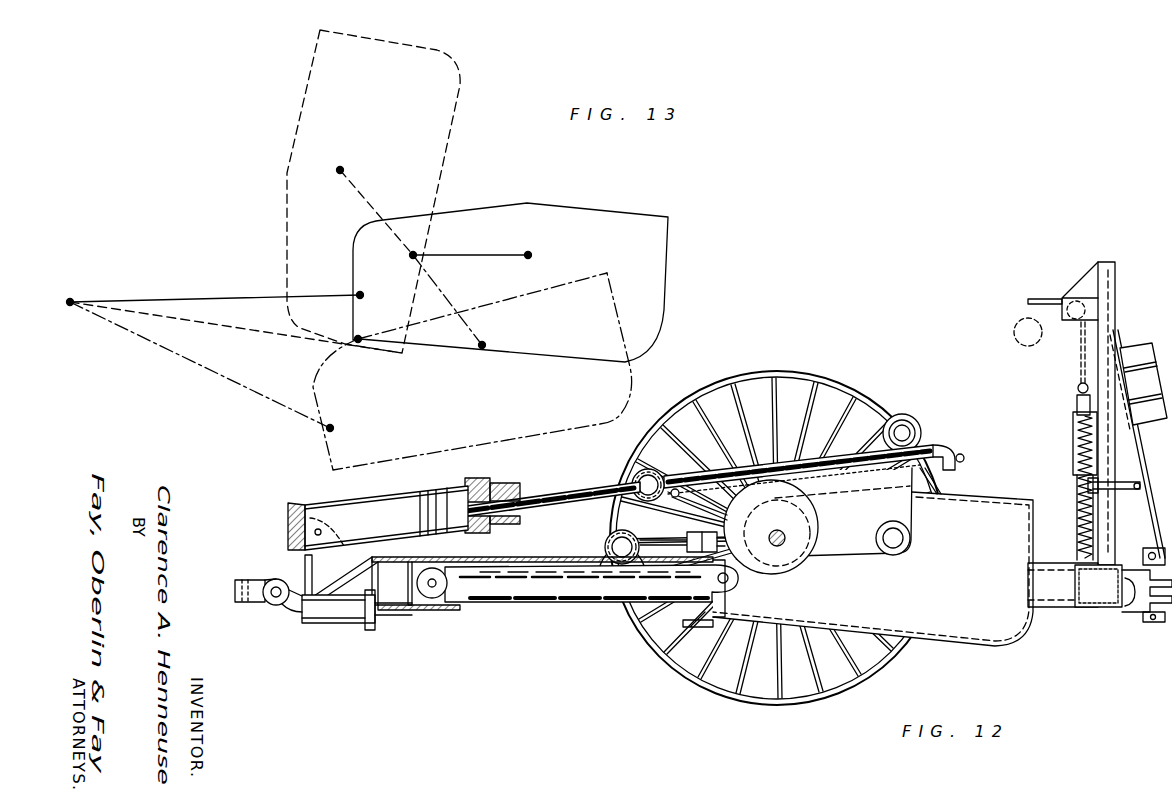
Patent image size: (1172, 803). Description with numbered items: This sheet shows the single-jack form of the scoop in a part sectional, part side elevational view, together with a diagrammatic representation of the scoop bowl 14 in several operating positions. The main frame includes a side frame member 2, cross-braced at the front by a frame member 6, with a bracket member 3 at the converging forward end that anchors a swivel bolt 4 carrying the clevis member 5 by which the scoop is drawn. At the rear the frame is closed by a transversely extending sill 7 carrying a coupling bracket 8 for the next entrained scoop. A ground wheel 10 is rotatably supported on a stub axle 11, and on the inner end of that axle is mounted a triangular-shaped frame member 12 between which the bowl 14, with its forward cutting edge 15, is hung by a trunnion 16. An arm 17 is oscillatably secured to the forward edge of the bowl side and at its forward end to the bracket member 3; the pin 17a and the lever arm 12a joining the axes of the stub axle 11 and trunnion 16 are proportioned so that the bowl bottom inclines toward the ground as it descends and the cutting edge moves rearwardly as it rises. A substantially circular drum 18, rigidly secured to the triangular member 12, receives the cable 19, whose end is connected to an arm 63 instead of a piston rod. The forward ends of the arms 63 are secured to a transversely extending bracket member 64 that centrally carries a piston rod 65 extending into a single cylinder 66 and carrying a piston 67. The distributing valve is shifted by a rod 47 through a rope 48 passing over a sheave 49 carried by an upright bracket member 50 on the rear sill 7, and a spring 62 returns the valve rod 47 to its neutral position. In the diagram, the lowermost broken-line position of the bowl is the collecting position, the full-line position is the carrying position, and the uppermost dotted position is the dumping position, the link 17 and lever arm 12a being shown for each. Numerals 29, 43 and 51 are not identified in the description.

In FIG. 12, the side frame member 2 is at (1046, 565).
In FIG. 12, the bracket member 3 is at (509, 580).
In FIG. 12, the swivel bolt 4 is at (341, 612).
In FIG. 12, the clevis member 5 is at (252, 604).
In FIG. 12, the frame member 6 is at (604, 548).
In FIG. 12, the sill 7 is at (1115, 577).
In FIG. 12, the coupling bracket 8 is at (1160, 612).
In FIG. 12, the ground wheel 10 is at (800, 371).
In FIG. 12, the stub axle 11 is at (788, 560).
In FIG. 12, the triangular-shaped frame member 12 is at (905, 500).
In FIG. 13, the lever arm of the bracket 12a is at (375, 186).
In FIG. 13, the scoop bowl 14 is at (460, 85).
In FIG. 12, the scoop bowl 14 is at (1017, 632).
In FIG. 12, the cutting edge 15 is at (703, 627).
In FIG. 12, the trunnion 16 is at (903, 540).
In FIG. 13, the arm 17 is at (230, 322).
In FIG. 12, the arm 17 is at (508, 598).
In FIG. 13, the pin 17a is at (333, 426).
In FIG. 12, the pin 17a is at (730, 582).
In FIG. 12, the drum 18 is at (700, 500).
In FIG. 12, the cable 19 is at (842, 483).
In FIG. 12, the adjusting link 29 is at (687, 546).
In FIG. 12, the box 43 is at (1138, 444).
In FIG. 12, the rod 47 is at (1077, 398).
In FIG. 12, the rope 48 is at (1030, 298).
In FIG. 12, the sheave 49 is at (1062, 318).
In FIG. 12, the upright bracket member 50 is at (1108, 318).
In FIG. 13, the pivot 51 is at (75, 295).
In FIG. 12, the pivot 51 is at (432, 598).
In FIG. 12, the spring 62 is at (1073, 428).
In FIG. 12, the arm 63 is at (763, 447).
In FIG. 12, the transversely extending bracket member 64 is at (652, 470).
In FIG. 12, the piston rod 65 is at (563, 492).
In FIG. 12, the cylinder 66 is at (372, 500).
In FIG. 12, the piston 67 is at (420, 495).